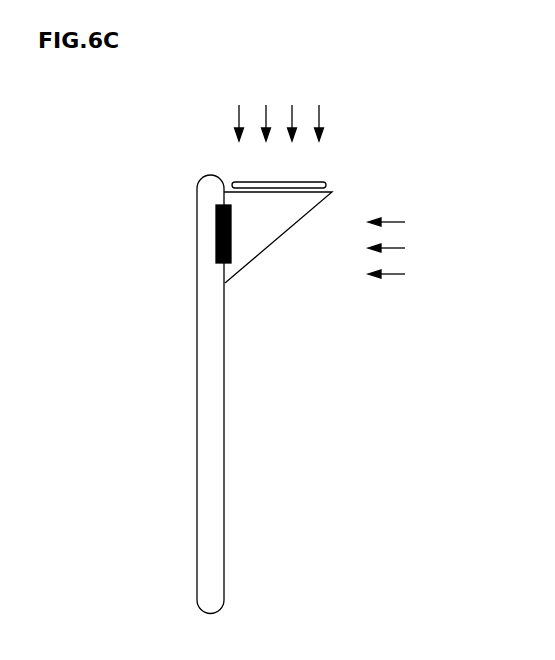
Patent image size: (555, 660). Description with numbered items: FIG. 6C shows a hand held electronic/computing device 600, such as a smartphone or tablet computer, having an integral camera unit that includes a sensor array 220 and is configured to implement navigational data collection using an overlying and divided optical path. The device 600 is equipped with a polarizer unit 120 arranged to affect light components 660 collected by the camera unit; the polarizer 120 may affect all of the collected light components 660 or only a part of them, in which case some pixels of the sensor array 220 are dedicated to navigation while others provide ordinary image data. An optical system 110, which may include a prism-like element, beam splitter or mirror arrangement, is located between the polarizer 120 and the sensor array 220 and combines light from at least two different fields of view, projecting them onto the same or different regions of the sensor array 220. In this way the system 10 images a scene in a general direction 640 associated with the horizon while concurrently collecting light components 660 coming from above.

The system 10 is at (319, 355).
The optical system 110 is at (278, 238).
The polarizer unit 120 is at (324, 186).
The sensor array 220 is at (217, 207).
The hand held electronic/computing device 600 is at (197, 396).
The general direction 640 is at (393, 274).
The light components 660 is at (319, 117).